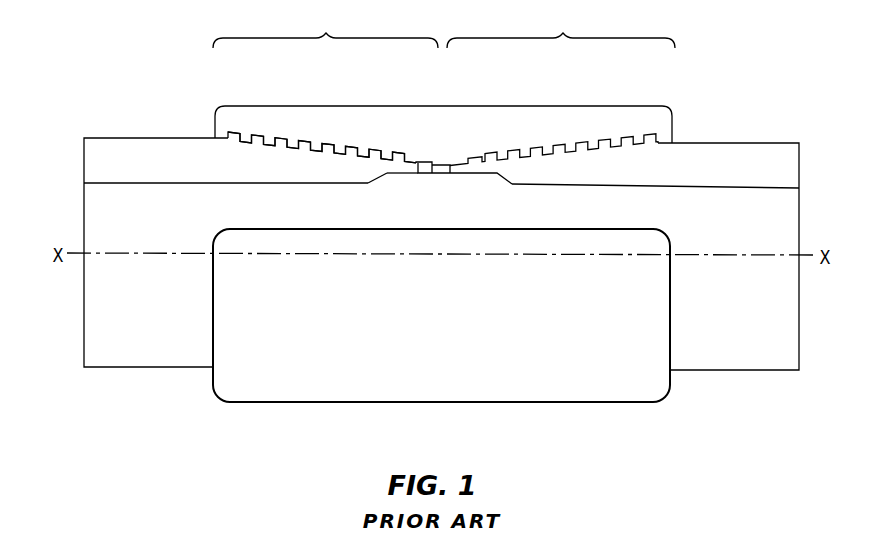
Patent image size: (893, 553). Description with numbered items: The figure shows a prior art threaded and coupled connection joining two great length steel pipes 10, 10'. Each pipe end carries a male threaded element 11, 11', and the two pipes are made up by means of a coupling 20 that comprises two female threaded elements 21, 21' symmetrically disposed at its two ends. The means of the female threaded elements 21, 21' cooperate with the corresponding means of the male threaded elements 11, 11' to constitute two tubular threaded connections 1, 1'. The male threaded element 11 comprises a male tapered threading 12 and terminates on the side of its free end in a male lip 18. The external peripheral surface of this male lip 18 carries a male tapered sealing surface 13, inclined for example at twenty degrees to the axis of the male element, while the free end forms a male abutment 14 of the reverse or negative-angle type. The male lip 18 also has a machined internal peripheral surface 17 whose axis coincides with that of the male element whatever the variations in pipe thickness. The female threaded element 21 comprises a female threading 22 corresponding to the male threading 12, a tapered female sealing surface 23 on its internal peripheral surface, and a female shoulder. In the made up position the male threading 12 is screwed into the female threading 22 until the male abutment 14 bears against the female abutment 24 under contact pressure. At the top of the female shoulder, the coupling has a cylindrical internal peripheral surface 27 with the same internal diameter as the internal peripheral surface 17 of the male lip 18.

The tubular threaded connection 1 is at (325, 26).
The tubular threaded connection 1' is at (561, 27).
The steel pipe 10 is at (156, 227).
The steel pipe 10' is at (728, 232).
The male threaded element 11 is at (226, 192).
The male threaded element 11' is at (655, 195).
The male tapered threading 12 is at (305, 152).
The male tapered sealing surface 13 is at (415, 173).
The male abutment 14 is at (432, 168).
The internal peripheral surface 17 is at (426, 170).
The male lip 18 is at (402, 165).
The coupling 20 is at (528, 377).
The female threaded element 21 is at (443, 98).
The female threaded element 21' is at (554, 112).
The female threading 22 is at (338, 145).
The tapered female sealing surface 23 is at (420, 163).
The female abutment 24 is at (445, 165).
The cylindrical internal peripheral surface 27 is at (452, 175).